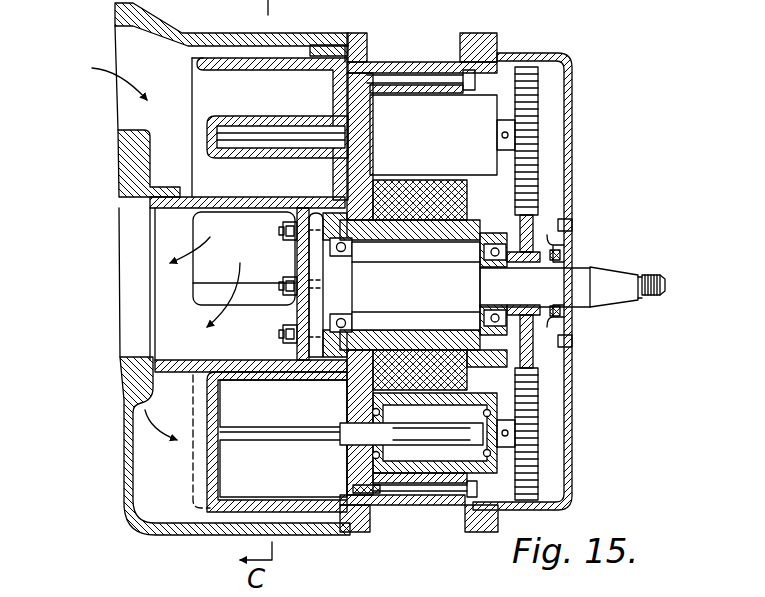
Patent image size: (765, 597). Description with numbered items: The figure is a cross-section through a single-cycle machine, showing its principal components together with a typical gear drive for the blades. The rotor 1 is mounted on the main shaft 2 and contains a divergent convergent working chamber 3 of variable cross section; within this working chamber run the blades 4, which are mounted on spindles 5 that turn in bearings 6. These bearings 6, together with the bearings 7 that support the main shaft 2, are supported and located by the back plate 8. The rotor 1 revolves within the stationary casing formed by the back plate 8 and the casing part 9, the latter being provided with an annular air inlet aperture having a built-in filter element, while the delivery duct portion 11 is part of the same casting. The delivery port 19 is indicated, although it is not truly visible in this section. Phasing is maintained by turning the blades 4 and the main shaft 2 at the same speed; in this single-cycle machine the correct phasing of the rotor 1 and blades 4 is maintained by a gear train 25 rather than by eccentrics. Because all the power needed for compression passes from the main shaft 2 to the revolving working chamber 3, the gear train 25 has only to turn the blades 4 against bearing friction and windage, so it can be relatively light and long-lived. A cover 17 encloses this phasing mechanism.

The rotor 1 is at (277, 73).
The main shaft 2 is at (600, 280).
The working chamber 3 is at (304, 6).
The blades 4 is at (287, 137).
The blade spindles 5 is at (362, 422).
The bearings 6 is at (483, 447).
The bearings 7 is at (487, 318).
The back plate 8 is at (422, 67).
The casing part with air inlet aperture 9 is at (333, 33).
The delivery duct portion 11 is at (115, 14).
The cover 17 is at (557, 62).
The delivery port 19 is at (250, 243).
The gear train 25 is at (515, 107).